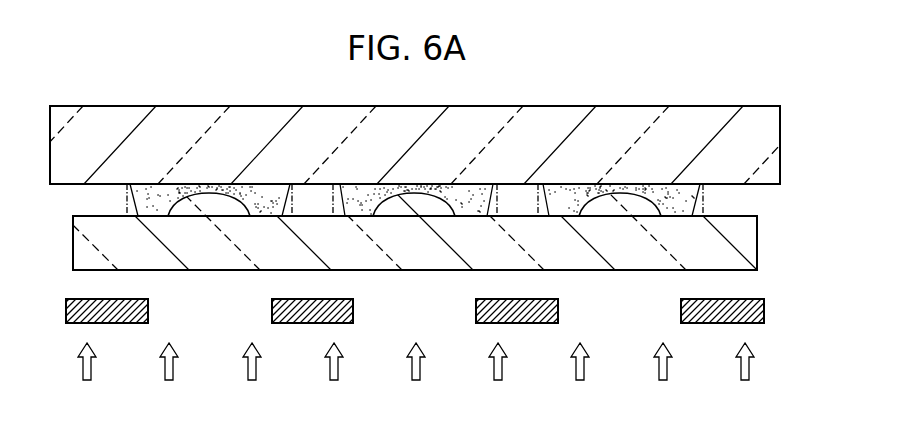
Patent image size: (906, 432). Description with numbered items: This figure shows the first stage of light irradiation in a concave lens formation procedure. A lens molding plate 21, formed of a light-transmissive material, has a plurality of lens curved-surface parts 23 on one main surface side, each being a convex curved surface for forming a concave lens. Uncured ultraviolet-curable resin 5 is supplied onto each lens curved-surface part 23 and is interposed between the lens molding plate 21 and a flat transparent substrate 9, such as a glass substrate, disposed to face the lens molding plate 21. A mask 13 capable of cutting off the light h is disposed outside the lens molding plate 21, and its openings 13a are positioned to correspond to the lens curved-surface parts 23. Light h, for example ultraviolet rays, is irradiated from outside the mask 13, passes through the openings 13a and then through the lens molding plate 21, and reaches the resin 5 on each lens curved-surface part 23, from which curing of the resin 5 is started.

The transparent substrate 9 is at (108, 118).
The lens molding plate 21 is at (93, 248).
The lens curved-surface part 23 is at (178, 212).
The resin 5 is at (261, 192).
The mask 13 is at (118, 323).
The opening 13a is at (148, 308).
The light h is at (257, 367).